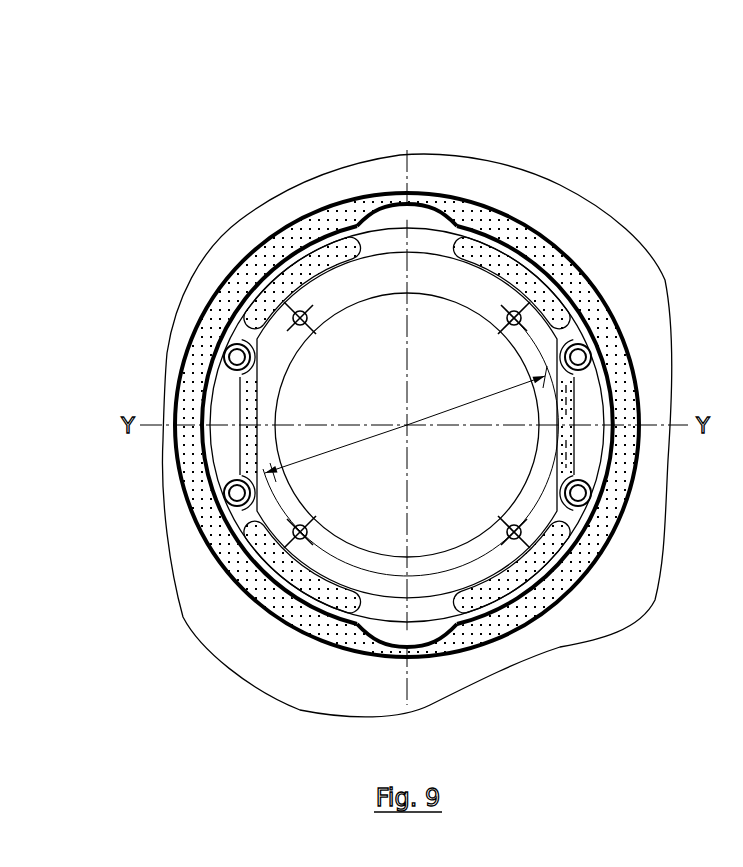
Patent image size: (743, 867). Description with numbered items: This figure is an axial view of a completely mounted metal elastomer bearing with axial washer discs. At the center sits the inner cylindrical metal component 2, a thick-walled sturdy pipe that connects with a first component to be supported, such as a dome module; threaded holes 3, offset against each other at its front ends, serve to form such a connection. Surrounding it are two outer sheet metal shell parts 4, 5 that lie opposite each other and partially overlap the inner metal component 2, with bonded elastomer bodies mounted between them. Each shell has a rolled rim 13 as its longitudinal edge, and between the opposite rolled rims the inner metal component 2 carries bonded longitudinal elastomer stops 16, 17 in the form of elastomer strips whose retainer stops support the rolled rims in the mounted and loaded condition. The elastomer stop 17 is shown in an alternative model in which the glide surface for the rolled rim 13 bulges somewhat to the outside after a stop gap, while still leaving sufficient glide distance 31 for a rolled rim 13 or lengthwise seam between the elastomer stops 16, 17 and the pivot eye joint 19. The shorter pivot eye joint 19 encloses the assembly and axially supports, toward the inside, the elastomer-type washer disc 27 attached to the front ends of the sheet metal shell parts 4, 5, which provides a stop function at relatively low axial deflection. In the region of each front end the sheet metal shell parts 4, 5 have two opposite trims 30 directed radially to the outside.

The inner cylindrical metal component 2 is at (363, 280).
The threaded holes 3 is at (518, 313).
The sheet metal shell part 4 is at (497, 243).
The sheet metal shell part 5 is at (288, 593).
The rolled rim 13 is at (588, 346).
The elastomer stop 16 is at (210, 395).
The elastomer stop 17 is at (617, 375).
The pivot eye joint 19 is at (203, 612).
The washer disc 27 is at (531, 613).
The trims 30 is at (386, 642).
The glide distance 31 is at (596, 446).